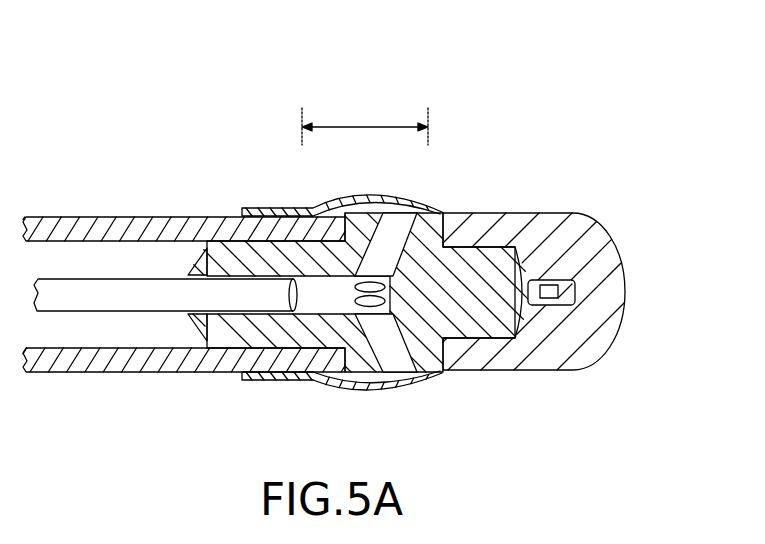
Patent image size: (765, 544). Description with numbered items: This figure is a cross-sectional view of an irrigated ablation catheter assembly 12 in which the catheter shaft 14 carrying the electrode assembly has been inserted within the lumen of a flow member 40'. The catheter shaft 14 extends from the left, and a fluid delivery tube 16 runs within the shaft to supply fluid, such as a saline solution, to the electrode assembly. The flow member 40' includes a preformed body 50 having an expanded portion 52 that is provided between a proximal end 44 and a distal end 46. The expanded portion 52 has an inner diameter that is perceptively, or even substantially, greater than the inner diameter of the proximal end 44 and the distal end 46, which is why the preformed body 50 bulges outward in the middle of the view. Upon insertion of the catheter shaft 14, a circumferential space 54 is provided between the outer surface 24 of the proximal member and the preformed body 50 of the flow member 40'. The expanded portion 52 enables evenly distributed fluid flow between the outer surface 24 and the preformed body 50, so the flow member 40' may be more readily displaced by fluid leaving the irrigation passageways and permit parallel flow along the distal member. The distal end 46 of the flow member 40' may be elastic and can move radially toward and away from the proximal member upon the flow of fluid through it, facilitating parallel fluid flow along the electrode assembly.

The irrigated ablation catheter assembly 12 is at (324, 239).
The catheter shaft 14 is at (96, 216).
The fluid delivery tube 16 is at (110, 297).
The outer surface 24 is at (363, 373).
The flow member 40' is at (358, 198).
The proximal end 44 is at (243, 212).
The distal end 46 is at (450, 211).
The preformed body 50 is at (317, 378).
The expanded portion 52 is at (404, 126).
The circumferential space 54 is at (402, 200).